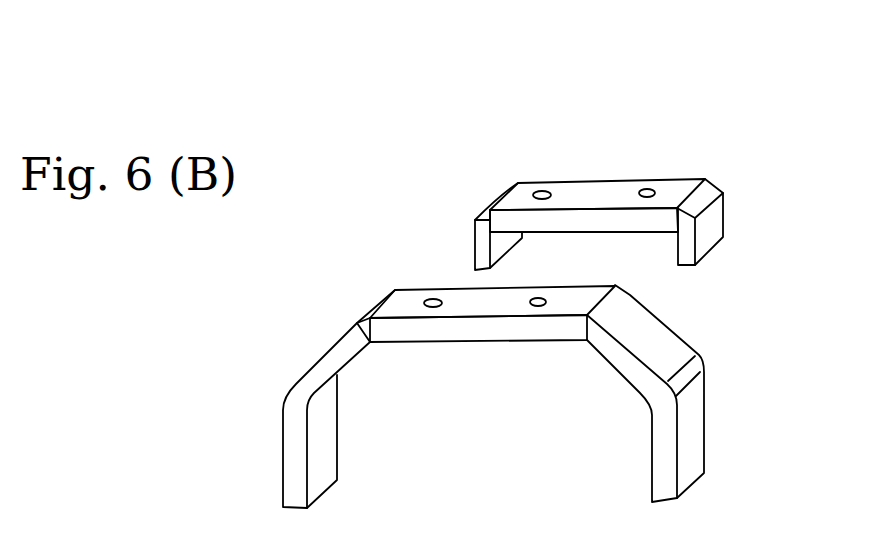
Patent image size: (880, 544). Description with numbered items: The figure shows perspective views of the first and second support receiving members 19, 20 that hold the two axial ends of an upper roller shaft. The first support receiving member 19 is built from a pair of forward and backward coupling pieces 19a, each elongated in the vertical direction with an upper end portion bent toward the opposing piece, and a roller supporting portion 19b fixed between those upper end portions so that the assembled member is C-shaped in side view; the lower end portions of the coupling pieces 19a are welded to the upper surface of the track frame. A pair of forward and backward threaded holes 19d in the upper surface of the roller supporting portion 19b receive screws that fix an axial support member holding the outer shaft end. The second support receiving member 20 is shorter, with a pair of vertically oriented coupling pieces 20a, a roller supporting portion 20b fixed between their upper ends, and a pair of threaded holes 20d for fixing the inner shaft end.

The first support receiving member 19 is at (360, 283).
The coupling pieces 19a is at (325, 357).
The roller supporting portion 19b is at (478, 330).
The threaded holes 19d is at (430, 308).
The second support receiving member 20 is at (783, 125).
The coupling pieces 20a is at (480, 238).
The roller supporting portion 20b is at (613, 195).
The threaded holes 20d is at (542, 187).